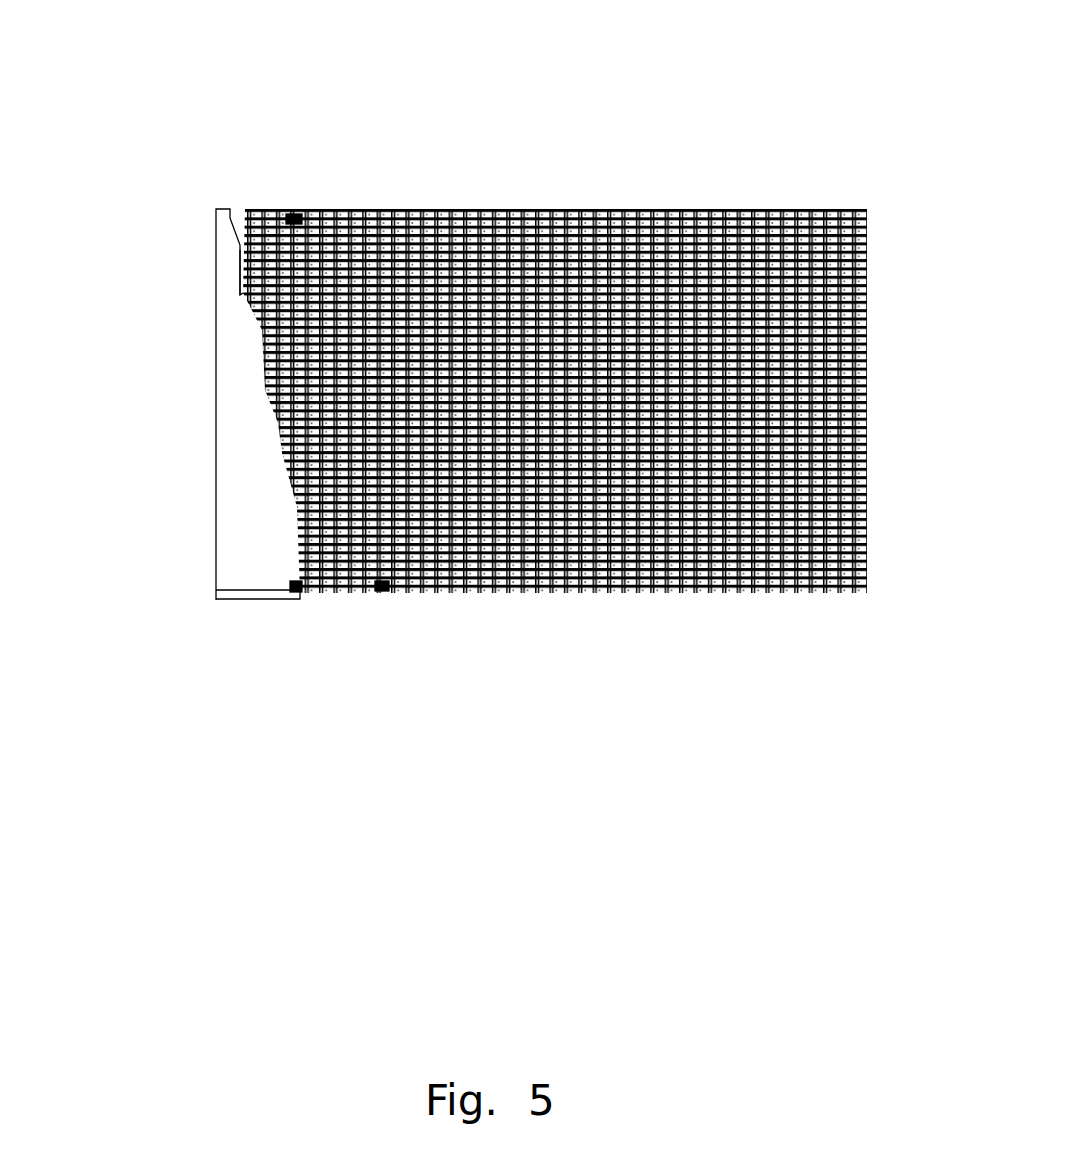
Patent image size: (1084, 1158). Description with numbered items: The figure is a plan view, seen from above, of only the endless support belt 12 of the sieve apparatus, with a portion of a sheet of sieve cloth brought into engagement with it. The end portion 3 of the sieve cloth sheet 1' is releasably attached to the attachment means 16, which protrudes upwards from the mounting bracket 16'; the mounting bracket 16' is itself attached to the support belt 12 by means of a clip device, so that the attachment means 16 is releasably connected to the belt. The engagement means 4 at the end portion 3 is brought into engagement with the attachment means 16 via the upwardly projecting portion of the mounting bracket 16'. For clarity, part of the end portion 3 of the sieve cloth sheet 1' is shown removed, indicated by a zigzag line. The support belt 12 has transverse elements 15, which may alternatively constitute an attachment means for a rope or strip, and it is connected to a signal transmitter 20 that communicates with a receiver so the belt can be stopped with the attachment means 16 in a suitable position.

The sieve cloth sheet 1' is at (142, 404).
The end portion 3 is at (295, 563).
The engagement means 4 is at (292, 587).
The support belt 12 is at (555, 297).
The transverse elements 15 is at (529, 247).
The attachment means 16 is at (270, 406).
The mounting bracket 16' is at (270, 406).
The signal transmitter 20 is at (385, 592).